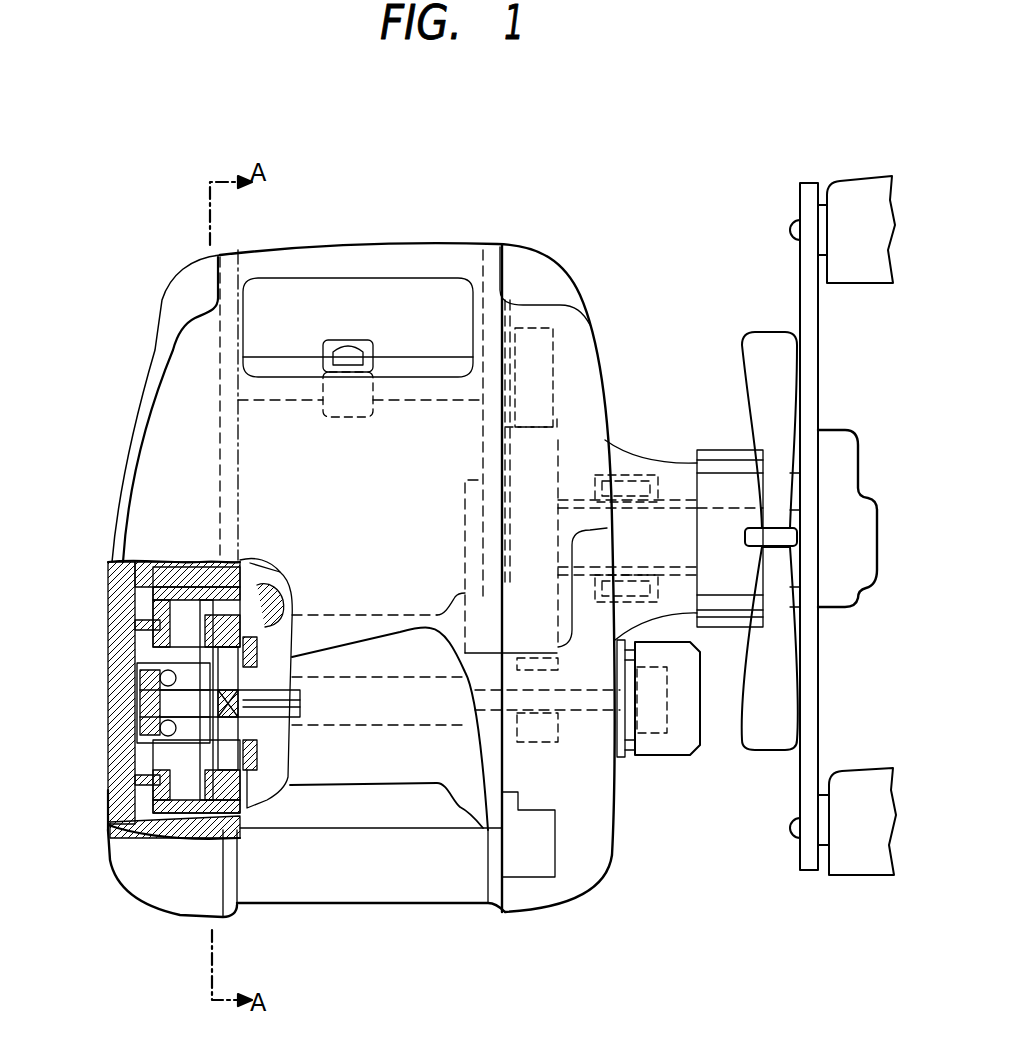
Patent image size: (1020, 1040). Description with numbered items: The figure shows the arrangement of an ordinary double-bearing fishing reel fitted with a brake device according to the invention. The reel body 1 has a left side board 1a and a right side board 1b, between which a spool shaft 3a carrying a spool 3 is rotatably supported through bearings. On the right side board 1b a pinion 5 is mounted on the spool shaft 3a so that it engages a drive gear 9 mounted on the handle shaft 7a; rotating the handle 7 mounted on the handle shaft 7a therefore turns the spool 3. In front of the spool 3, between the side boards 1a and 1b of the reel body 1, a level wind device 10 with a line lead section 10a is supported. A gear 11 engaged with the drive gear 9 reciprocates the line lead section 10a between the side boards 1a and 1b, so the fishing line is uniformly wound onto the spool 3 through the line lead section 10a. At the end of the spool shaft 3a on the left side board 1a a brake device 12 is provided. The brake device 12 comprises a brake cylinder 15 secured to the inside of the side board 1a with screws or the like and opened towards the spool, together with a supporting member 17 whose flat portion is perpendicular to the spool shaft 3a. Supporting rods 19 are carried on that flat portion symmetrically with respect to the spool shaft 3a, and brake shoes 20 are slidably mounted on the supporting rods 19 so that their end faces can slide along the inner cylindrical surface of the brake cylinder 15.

The reel body 1 is at (518, 234).
The left side board 1a is at (192, 283).
The right side board 1b is at (558, 270).
The spool 3 is at (377, 785).
The spool shaft 3a is at (285, 705).
The pinion 5 is at (553, 720).
The handle 7 is at (866, 268).
The handle shaft 7a is at (722, 530).
The drive gear 9 is at (545, 442).
The level wind device 10 is at (373, 316).
The line lead section 10a is at (345, 345).
The gear 11 is at (546, 352).
The brake device 12 is at (173, 843).
The brake cylinder 15 is at (188, 588).
The supporting member 17 is at (153, 663).
The supporting rods 19 is at (150, 625).
The brake shoes 20 is at (262, 605).